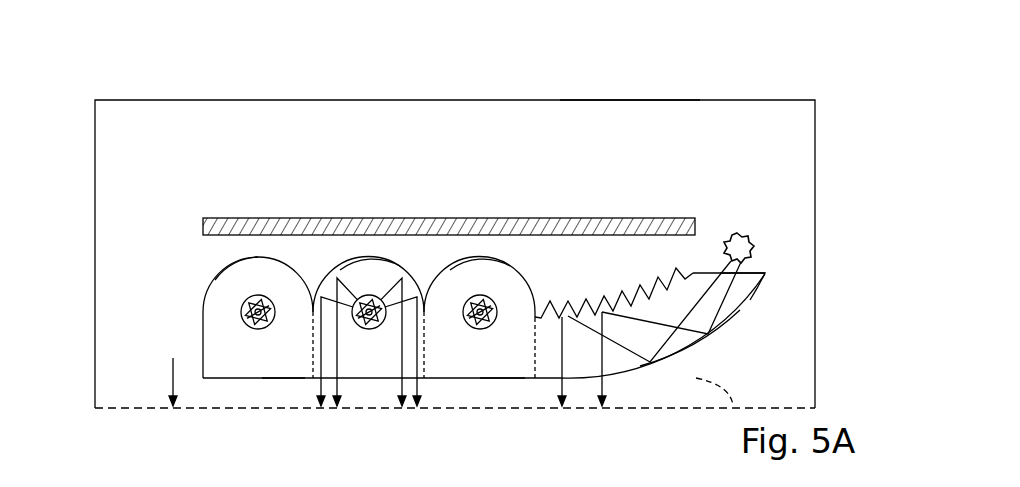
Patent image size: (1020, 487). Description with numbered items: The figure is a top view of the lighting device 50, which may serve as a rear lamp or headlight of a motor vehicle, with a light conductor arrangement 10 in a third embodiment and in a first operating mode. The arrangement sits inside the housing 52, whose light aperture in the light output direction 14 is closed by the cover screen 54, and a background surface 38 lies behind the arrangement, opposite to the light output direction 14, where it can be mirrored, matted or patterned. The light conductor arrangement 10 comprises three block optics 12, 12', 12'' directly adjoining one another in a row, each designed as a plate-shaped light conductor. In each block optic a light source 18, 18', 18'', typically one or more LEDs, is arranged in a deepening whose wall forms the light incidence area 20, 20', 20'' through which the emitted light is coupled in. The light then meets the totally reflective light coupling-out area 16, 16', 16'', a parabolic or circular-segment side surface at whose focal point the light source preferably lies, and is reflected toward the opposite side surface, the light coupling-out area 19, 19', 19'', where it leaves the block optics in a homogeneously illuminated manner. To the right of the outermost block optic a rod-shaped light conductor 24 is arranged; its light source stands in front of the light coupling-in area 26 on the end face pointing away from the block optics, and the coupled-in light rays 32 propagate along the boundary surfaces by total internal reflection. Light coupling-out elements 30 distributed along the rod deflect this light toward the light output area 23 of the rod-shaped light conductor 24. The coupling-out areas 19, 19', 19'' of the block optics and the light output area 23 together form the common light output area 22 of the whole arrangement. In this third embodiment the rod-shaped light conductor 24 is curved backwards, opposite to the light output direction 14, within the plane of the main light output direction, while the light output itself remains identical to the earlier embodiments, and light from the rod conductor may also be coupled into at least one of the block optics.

The light conductor arrangement 10 is at (777, 237).
The block optics 12 is at (381, 317).
The block optics 12' is at (368, 318).
The block optics 12'' is at (479, 318).
The light output direction 14 is at (173, 366).
The totally reflective light coupling-out area 16 is at (199, 263).
The totally reflective light coupling-out area 16' is at (377, 223).
The totally reflective light coupling-out area 16'' is at (486, 223).
The light source 18 is at (249, 245).
The light source 18' is at (365, 245).
The light source 18'' is at (464, 245).
The light coupling-out area 19 is at (283, 419).
The light coupling-out area 19' is at (369, 369).
The light coupling-out area 19'' is at (500, 419).
The light incidence area 20 is at (207, 308).
The light incidence area 20' is at (347, 252).
The light incidence area 20'' is at (517, 252).
The light output area 22 is at (698, 345).
The light output area 23 is at (617, 372).
The rod-shaped light conductor 24 is at (743, 298).
The light coupling-in area 26 is at (752, 273).
The light coupling-out elements 30 is at (619, 271).
The light rays 32 is at (649, 318).
The background surface 38 is at (590, 217).
The lighting device 50 is at (719, 69).
The housing 52 is at (626, 100).
The cover screen 54 is at (700, 387).